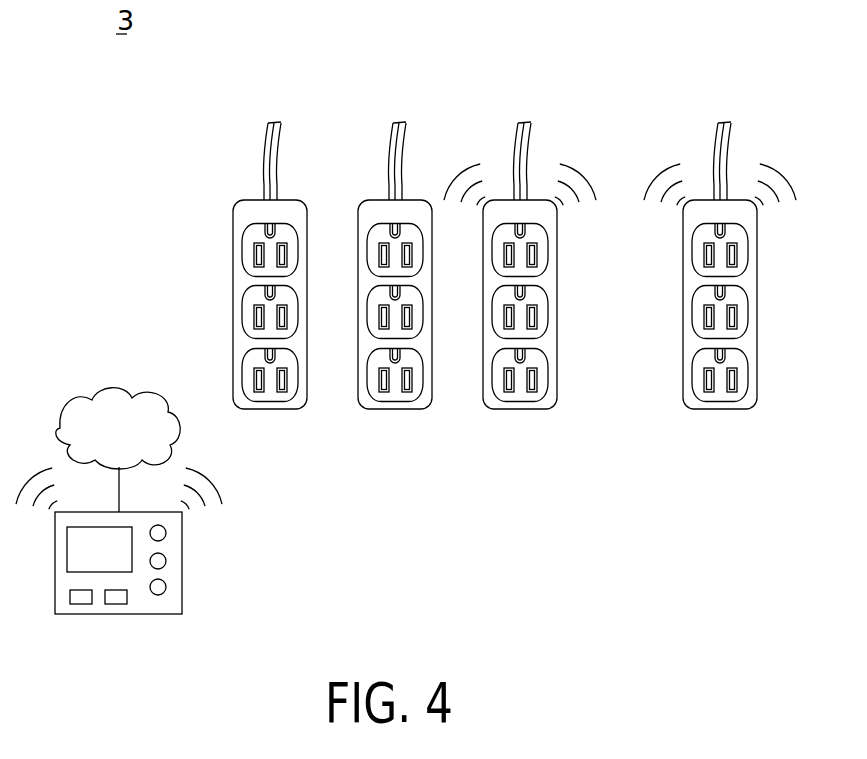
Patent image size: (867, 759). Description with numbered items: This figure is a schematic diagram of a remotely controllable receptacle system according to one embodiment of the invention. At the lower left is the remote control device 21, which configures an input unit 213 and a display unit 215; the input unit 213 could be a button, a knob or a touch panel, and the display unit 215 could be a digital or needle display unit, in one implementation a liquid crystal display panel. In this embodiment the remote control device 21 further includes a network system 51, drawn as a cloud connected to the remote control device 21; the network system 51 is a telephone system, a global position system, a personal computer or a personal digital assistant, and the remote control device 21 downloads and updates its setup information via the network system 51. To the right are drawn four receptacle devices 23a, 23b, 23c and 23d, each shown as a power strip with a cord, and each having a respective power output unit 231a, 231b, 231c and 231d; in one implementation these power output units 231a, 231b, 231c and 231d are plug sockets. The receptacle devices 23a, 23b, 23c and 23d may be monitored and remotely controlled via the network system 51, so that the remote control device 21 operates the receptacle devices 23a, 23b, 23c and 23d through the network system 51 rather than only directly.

The network system 51 is at (136, 393).
The remote control device 21 is at (125, 571).
The input unit 213 is at (82, 605).
The display unit 215 is at (123, 563).
The receptacle device 23a is at (294, 296).
The receptacle device 23b is at (419, 296).
The receptacle device 23c is at (524, 296).
The receptacle device 23d is at (725, 296).
The power output unit 231a is at (293, 375).
The power output unit 231b is at (418, 375).
The power output unit 231c is at (543, 375).
The power output unit 231d is at (743, 375).